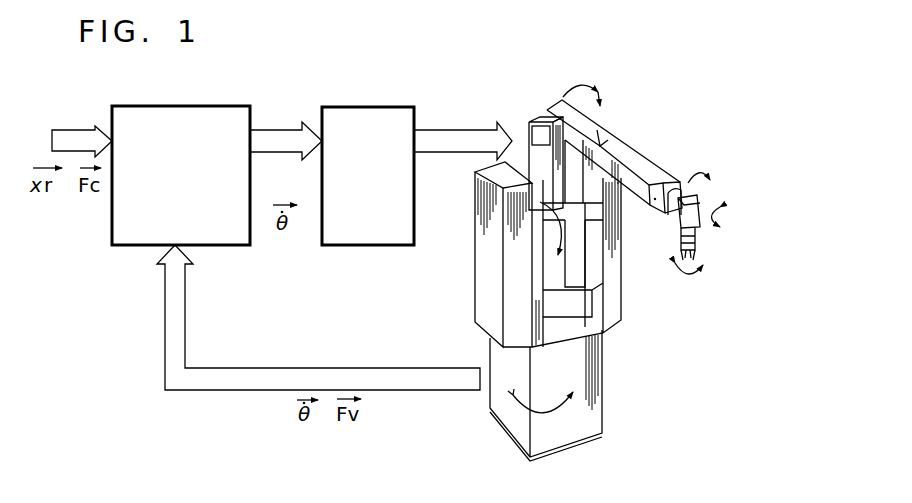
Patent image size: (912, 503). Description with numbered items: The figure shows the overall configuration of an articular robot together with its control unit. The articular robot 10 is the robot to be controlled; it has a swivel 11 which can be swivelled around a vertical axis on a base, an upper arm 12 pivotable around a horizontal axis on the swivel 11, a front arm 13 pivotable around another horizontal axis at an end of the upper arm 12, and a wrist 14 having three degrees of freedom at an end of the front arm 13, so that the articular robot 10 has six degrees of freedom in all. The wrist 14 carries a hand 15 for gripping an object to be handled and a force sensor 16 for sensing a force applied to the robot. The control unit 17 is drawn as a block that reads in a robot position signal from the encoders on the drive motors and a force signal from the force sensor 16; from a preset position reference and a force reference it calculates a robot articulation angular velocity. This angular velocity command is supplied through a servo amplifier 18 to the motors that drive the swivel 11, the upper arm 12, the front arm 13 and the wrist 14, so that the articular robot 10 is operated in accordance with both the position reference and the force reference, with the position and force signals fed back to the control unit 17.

The articular robot 10 is at (492, 422).
The swivel 11 is at (603, 396).
The upper arm 12 is at (525, 143).
The front arm 13 is at (629, 156).
The wrist 14 is at (702, 203).
The hand 15 is at (700, 250).
The force sensor 16 is at (680, 228).
The control unit 17 is at (208, 106).
The servo amplifier 18 is at (383, 107).